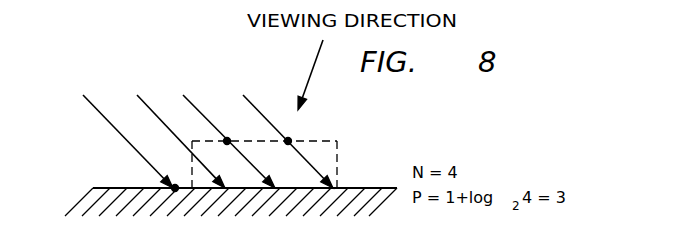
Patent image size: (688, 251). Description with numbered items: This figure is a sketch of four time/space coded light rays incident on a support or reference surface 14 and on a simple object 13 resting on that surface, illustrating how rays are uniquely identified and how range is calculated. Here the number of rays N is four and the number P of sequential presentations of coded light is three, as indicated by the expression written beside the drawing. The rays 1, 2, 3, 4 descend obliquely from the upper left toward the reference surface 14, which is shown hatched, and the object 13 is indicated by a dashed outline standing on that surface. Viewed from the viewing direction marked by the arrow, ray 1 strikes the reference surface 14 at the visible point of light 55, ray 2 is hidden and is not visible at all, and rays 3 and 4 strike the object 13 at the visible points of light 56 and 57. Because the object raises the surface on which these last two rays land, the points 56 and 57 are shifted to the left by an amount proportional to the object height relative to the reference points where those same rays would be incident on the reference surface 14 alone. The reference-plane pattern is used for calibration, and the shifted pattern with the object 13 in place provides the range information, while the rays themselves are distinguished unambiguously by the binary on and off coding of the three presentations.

The ray 1 is at (121, 138).
The ray 2 is at (171, 138).
The ray 3 is at (220, 138).
The ray 4 is at (280, 138).
The object 13 is at (193, 140).
The reference surface 14 is at (102, 187).
The visible point of light 55 is at (176, 184).
The visible point of light 56 is at (229, 138).
The visible point of light 57 is at (291, 140).